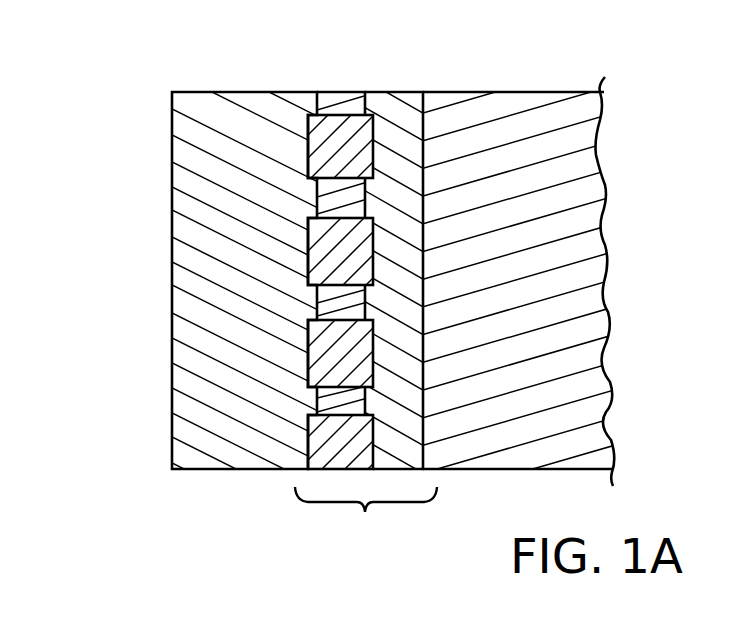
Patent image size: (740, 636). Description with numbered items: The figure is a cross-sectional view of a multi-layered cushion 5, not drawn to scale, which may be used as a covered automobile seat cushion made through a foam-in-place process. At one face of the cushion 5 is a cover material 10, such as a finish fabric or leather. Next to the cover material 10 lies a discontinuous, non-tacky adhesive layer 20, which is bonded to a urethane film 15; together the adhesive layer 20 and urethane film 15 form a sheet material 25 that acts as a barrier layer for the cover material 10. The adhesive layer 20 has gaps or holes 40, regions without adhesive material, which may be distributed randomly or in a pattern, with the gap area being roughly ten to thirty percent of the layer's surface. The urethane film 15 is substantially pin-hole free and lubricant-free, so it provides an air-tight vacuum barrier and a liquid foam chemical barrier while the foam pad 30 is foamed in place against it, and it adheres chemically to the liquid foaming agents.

The cushion 5 is at (104, 541).
The cover material 10 is at (210, 107).
The urethane film 15 is at (398, 92).
The discontinuous, non-tacky adhesive layer 20 is at (328, 92).
The sheet material 25 is at (366, 520).
The foam pad 30 is at (497, 92).
The gaps or holes 40 is at (327, 308).